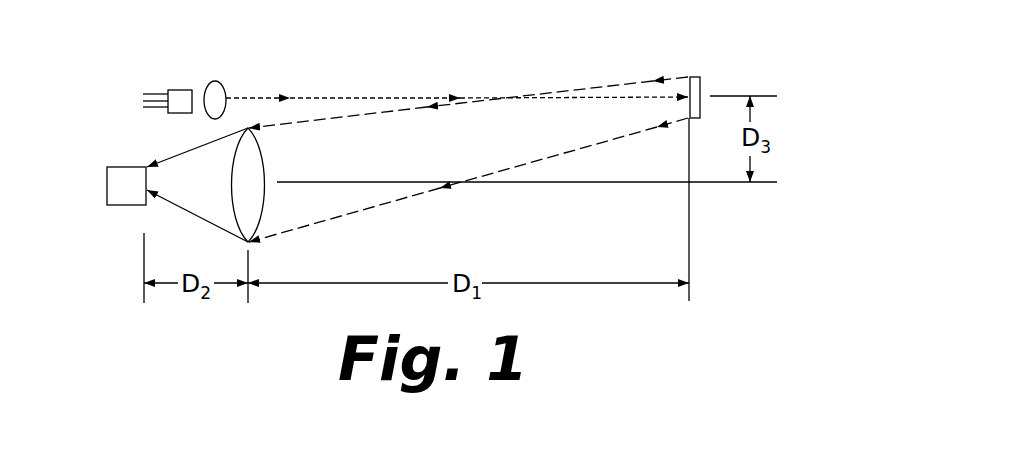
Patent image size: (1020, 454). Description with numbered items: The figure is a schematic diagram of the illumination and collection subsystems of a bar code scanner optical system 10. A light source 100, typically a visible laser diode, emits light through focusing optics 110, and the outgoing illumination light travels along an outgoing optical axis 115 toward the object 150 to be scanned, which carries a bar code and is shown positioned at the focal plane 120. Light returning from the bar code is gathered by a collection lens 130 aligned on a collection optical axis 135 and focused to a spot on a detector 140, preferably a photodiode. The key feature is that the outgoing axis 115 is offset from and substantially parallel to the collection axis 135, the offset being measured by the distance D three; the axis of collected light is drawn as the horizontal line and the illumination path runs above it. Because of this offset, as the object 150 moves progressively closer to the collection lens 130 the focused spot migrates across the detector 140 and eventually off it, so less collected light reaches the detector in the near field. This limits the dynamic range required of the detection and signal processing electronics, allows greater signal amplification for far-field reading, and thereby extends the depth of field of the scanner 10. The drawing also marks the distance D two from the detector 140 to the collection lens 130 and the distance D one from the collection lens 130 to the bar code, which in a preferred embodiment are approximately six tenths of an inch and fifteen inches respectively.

The optical system 10 is at (120, 230).
The light source 100 is at (175, 88).
The focusing optics 110 is at (212, 78).
The outgoing optical axis 115 is at (379, 95).
The focal plane 120 is at (689, 303).
The collection lens 130 is at (250, 127).
The collection optical axis 135 is at (540, 185).
The detector 140 is at (119, 165).
The object 150 is at (693, 74).